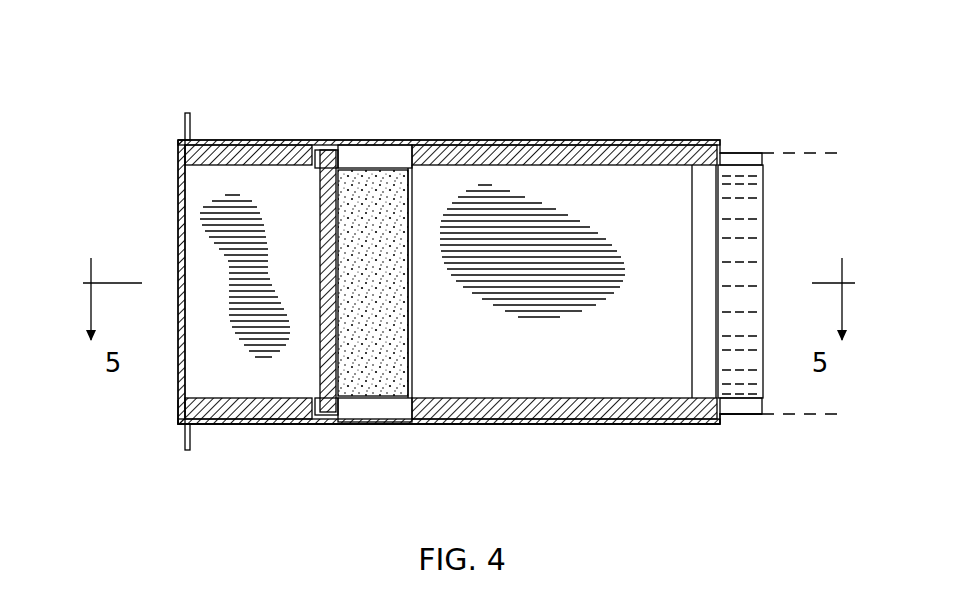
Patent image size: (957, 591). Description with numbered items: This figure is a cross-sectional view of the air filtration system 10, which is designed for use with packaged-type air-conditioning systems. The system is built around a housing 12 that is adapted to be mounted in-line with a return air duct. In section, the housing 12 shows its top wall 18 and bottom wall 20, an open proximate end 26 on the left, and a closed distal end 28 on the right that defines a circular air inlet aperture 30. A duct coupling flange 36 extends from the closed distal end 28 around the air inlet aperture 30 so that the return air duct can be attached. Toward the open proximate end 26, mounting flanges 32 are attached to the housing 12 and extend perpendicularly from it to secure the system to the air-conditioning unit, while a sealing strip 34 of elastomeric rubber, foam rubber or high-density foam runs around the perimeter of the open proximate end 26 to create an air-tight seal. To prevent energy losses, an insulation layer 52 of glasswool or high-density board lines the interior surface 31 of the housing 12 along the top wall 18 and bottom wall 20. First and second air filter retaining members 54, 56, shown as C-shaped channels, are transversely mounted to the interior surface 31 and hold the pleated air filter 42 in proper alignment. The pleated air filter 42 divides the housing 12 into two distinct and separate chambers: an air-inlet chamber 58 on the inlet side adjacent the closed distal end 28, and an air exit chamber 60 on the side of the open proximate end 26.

The air filtration system 10 is at (486, 112).
The housing 12 is at (625, 430).
The top wall 18 is at (542, 145).
The bottom wall 20 is at (478, 428).
The open proximate end 26 is at (178, 200).
The closed distal end 28 is at (730, 422).
The air inlet aperture 30 is at (720, 255).
The interior surface 31 is at (185, 185).
The mounting flange 32 is at (191, 118).
The sealing strip 34 is at (178, 402).
The duct coupling flange 36 is at (750, 157).
The pleated air filter 42 is at (368, 205).
The insulation layer 52 is at (237, 145).
The first air filter retaining member 54 is at (350, 150).
The second air filter retaining member 56 is at (350, 412).
The air-inlet chamber 58 is at (675, 218).
The air exit chamber 60 is at (207, 252).